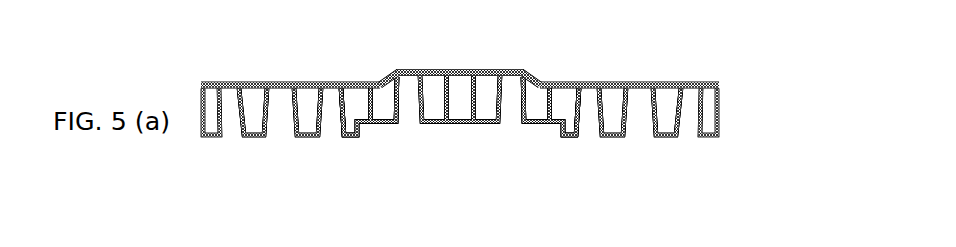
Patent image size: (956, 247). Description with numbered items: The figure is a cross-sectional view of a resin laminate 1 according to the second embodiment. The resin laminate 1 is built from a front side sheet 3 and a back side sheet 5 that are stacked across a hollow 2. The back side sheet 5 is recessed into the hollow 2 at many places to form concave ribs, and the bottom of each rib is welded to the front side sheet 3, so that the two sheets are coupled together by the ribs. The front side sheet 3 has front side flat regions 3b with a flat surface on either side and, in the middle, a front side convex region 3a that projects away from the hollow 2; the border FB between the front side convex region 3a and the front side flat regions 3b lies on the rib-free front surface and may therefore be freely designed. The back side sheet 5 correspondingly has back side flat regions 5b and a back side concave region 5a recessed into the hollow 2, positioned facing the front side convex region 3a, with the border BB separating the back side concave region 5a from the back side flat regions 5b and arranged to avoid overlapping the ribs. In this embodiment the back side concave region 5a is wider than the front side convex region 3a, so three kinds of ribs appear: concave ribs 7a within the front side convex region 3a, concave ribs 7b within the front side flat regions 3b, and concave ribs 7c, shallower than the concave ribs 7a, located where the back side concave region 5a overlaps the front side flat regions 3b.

The resin laminate 1 is at (499, 120).
The hollow 2 is at (254, 119).
The front side sheet 3 is at (477, 56).
The front side convex region 3a is at (523, 63).
The front side flat regions 3b is at (380, 75).
The back side sheet 5 is at (482, 151).
The back side concave region 5a is at (545, 190).
The back side flat regions 5b is at (352, 190).
The concave ribs 7a is at (432, 128).
The concave ribs 7b is at (280, 129).
The concave ribs 7c is at (382, 128).
The border FB is at (385, 79).
The border BB is at (377, 128).